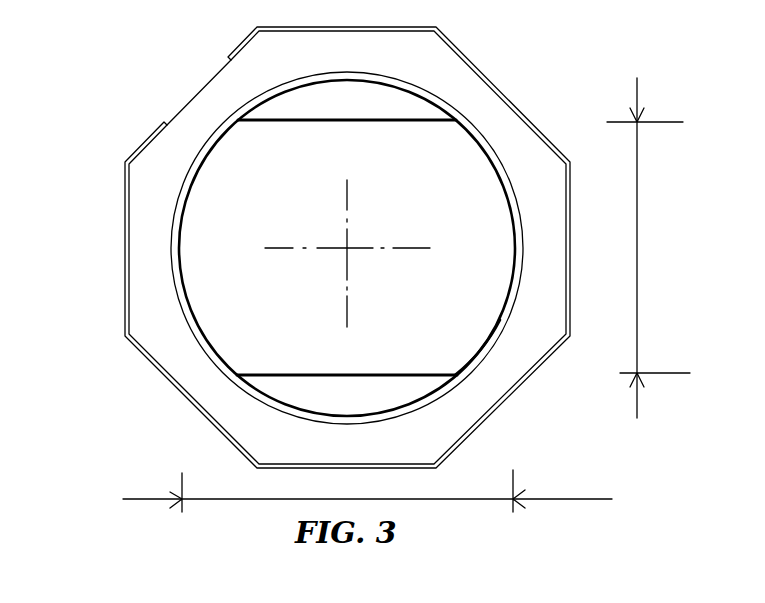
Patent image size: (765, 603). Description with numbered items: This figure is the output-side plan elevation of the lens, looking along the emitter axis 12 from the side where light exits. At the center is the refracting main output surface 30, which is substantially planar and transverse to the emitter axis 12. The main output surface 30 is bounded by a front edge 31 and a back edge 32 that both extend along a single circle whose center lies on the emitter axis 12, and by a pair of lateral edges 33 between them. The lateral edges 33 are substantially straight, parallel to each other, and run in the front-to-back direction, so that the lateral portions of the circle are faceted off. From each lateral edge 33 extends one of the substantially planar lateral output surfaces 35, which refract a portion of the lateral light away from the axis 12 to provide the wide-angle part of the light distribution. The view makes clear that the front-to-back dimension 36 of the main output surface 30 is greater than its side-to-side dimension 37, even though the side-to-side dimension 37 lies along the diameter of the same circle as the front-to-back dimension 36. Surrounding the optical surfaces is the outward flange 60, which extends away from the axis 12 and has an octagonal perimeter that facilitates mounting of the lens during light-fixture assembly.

The emitter axis 12 is at (348, 248).
The main output surface 30 is at (455, 168).
The front edge 31 is at (180, 247).
The back edge 32 is at (495, 325).
The lateral edges 33 is at (300, 375).
The lateral output surfaces 35 is at (375, 105).
The front-to-back dimension 36 is at (250, 500).
The side-to-side dimension 37 is at (648, 248).
The outward flange 60 is at (462, 417).